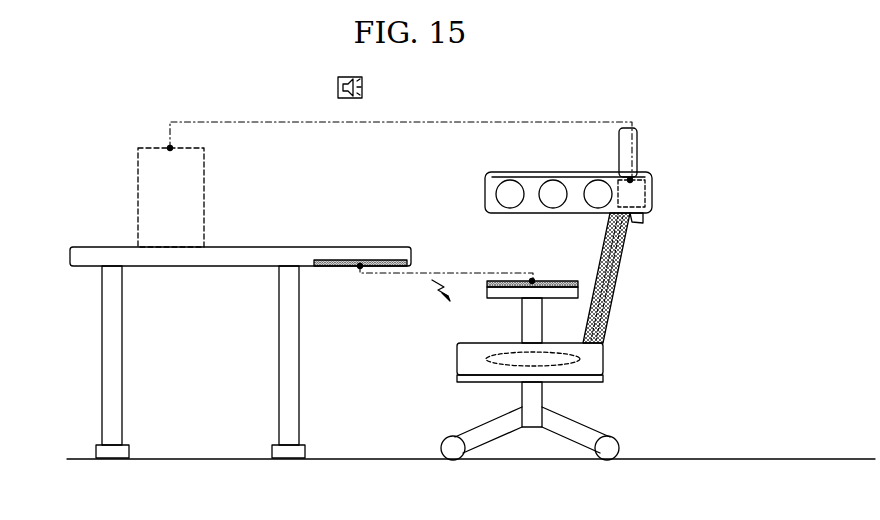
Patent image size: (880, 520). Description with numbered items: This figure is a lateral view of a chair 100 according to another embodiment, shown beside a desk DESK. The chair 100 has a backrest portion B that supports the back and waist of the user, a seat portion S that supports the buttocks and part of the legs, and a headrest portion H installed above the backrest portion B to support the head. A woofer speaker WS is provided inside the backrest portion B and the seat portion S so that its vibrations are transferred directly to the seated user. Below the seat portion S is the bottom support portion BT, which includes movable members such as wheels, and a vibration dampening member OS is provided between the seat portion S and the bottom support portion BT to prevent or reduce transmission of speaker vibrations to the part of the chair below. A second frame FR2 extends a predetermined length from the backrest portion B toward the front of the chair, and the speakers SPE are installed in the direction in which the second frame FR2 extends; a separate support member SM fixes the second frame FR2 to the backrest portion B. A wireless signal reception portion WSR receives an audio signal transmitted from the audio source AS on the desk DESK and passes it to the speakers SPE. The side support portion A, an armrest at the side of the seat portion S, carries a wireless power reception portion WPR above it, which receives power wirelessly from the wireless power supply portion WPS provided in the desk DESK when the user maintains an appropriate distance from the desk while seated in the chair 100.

The desk DESK is at (92, 253).
The audio source AS is at (156, 157).
The wireless power supply portion WPS is at (340, 259).
The speaker SPE is at (507, 197).
The second frame FR2 is at (575, 182).
The chair 100 is at (652, 128).
The headrest portion H is at (634, 150).
The wireless signal reception portion WSR is at (641, 192).
The support member SM is at (641, 217).
The woofer speaker WS is at (627, 238).
The backrest portion B is at (605, 320).
The wireless power reception portion WPR is at (580, 284).
The side support portion A is at (528, 327).
The seat portion S is at (597, 352).
The vibration dampening member OS is at (600, 377).
The bottom support portion BT is at (527, 397).